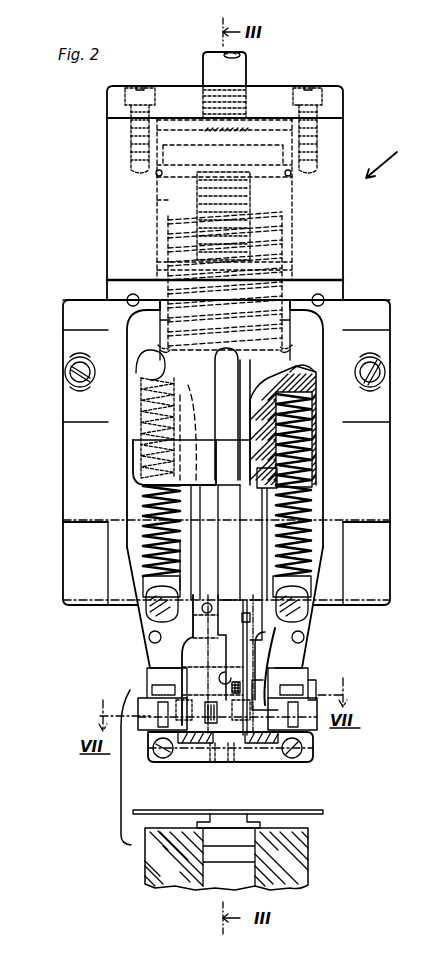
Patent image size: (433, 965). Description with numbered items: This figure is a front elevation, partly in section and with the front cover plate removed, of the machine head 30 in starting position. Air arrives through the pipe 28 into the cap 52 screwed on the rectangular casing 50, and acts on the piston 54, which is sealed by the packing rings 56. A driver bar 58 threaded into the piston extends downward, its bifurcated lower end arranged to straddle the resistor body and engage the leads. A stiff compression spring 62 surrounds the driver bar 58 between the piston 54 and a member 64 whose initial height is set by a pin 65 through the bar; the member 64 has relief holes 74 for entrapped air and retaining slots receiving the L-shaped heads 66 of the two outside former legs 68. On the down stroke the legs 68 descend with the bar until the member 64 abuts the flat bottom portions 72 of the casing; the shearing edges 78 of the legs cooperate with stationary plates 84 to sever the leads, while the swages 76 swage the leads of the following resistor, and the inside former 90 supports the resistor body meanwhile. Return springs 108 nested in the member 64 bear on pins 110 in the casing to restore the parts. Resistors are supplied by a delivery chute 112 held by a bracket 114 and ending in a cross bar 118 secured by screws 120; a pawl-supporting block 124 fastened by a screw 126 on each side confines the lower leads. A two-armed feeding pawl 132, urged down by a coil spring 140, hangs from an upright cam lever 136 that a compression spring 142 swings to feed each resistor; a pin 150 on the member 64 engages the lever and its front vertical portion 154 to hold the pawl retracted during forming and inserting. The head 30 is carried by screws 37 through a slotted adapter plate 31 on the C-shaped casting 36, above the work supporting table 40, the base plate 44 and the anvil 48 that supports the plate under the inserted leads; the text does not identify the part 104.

The pipe 28 is at (247, 72).
The machine head 30 is at (386, 157).
The adapter plate 31 is at (376, 302).
The C-shaped casting 36 is at (300, 882).
The screws 37 is at (66, 368).
The work supporting table 40 is at (310, 863).
The base plate 44 is at (316, 810).
The anvil 48 is at (262, 828).
The casing 50 is at (345, 233).
The cap 52 is at (345, 104).
The piston 54 is at (157, 203).
The packing rings 56 is at (150, 170).
The driver bar 58 is at (198, 212).
The compression spring 62 is at (280, 256).
The member 64 is at (295, 328).
The pin 65 is at (140, 488).
The L-shaped heads 66 is at (346, 451).
The outside former legs 68 is at (192, 548).
The flat bottom portions 72 is at (200, 566).
The relief holes 74 is at (224, 345).
The swages 76 is at (190, 652).
The shearing edges 78 is at (275, 700).
The stationary plates 84 is at (146, 668).
The inside former 90 is at (230, 765).
The link 104 is at (296, 613).
The compression springs 108 is at (145, 533).
The pins 110 is at (143, 622).
The delivery chute 112 is at (182, 762).
The bracket 114 is at (306, 573).
The cross bar 118 is at (314, 755).
The screws 120 is at (168, 765).
The pawl-supporting block 124 is at (138, 703).
The screw 126 is at (318, 690).
The feeding pawl 132 is at (142, 745).
The cam lever 136 is at (246, 553).
The coil spring 140 is at (212, 765).
The compression spring 142 is at (222, 682).
The pin 150 is at (224, 462).
The front vertical portion 154 is at (220, 512).